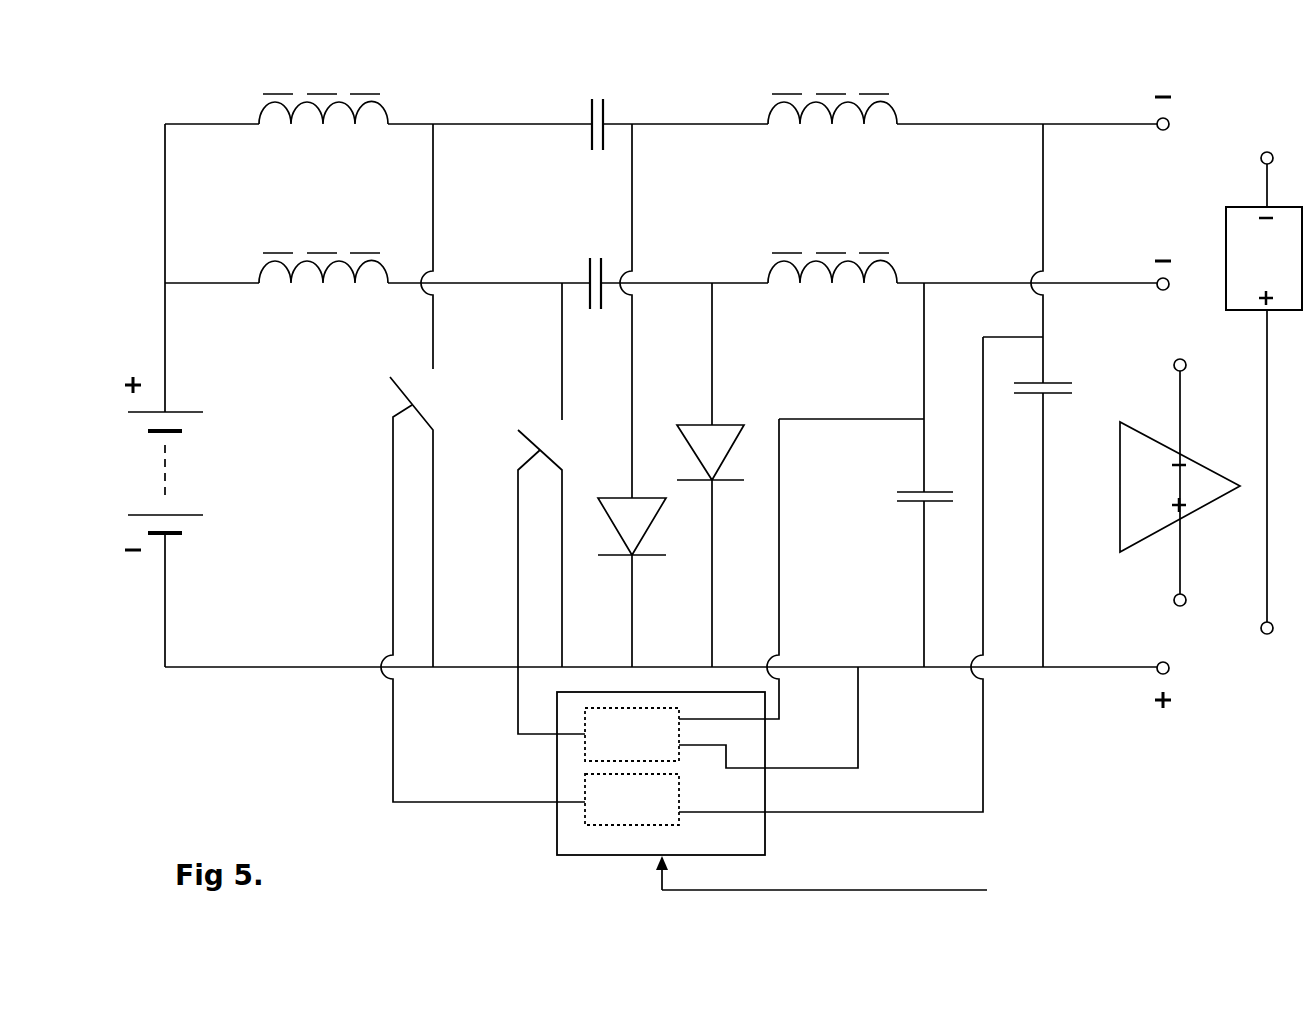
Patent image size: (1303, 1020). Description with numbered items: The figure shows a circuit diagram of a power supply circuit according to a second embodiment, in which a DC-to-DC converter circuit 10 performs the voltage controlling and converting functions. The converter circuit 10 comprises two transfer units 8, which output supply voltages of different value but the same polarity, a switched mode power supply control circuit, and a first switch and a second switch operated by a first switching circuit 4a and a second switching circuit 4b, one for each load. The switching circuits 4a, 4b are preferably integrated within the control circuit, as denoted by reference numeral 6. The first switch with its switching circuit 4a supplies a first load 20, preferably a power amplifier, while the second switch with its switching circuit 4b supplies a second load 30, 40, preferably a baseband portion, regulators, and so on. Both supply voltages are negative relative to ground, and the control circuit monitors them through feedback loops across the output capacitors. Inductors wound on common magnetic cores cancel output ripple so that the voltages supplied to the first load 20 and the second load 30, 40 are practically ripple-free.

The DC-to-DC converter circuit 10 is at (127, 98).
The transfer unit 8 is at (124, 275).
The integrated switching circuits within control circuit 6 is at (583, 857).
The switching circuit SWC1 4a is at (583, 745).
The switching circuit SWC2 4b is at (583, 812).
The first load 20 is at (1200, 463).
The second load 30 is at (1226, 255).
The second load 40 is at (1264, 393).